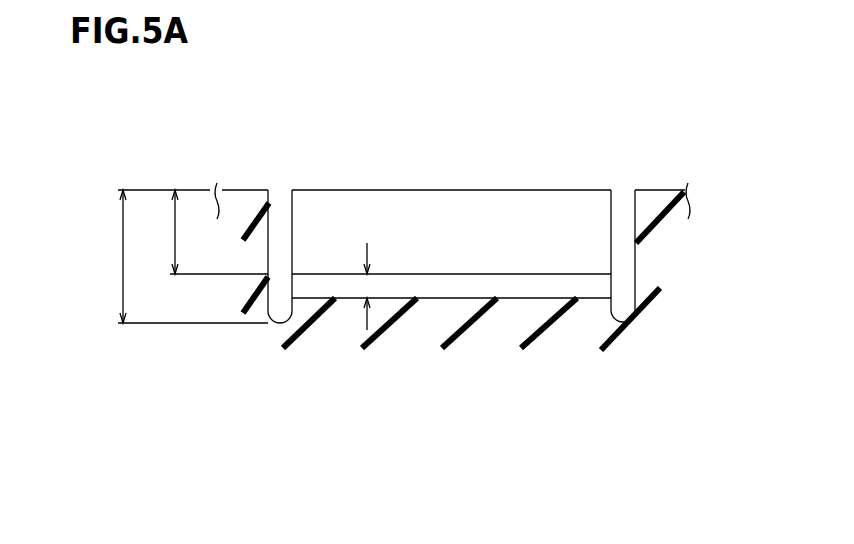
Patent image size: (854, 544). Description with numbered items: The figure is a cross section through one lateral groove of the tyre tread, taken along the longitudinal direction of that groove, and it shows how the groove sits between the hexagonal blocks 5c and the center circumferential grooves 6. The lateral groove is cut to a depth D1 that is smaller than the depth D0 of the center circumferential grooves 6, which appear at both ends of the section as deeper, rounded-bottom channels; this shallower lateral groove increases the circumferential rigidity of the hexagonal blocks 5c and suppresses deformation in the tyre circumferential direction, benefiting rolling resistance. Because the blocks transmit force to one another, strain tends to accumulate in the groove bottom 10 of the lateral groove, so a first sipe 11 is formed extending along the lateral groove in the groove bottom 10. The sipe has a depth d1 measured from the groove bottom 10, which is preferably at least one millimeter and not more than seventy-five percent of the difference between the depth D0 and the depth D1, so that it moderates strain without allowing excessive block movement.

The hexagonal block 5c is at (402, 190).
The center circumferential groove 6 is at (279, 186).
The groove bottom 10 is at (470, 274).
The first sipe 11 is at (533, 298).
The depth of first sipe d1 is at (366, 283).
The depth of lateral groove D1 is at (201, 232).
The depth of circumferential groove D0 is at (175, 256).